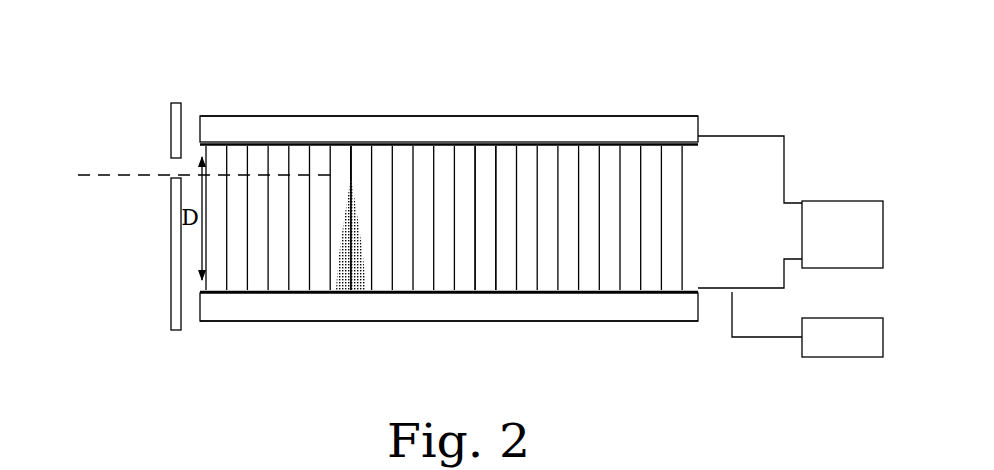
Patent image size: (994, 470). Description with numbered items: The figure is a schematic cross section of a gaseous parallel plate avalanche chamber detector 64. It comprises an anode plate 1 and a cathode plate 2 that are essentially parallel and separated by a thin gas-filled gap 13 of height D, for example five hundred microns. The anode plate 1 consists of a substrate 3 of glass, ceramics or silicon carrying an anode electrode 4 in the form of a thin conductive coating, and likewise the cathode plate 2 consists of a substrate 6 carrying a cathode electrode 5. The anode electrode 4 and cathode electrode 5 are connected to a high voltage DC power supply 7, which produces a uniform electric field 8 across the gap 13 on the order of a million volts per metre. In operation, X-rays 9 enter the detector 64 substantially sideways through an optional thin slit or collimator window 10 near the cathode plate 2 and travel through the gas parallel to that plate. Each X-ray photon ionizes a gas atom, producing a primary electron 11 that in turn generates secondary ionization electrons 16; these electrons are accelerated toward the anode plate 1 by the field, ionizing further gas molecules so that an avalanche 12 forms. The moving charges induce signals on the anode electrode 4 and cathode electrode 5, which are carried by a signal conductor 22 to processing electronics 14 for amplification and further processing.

The anode plate 1 is at (517, 323).
The cathode plate 2 is at (325, 115).
The substrate 3 is at (625, 316).
The anode electrode 4 is at (585, 293).
The cathode electrode 5 is at (702, 140).
The substrate 6 is at (650, 132).
The high voltage DC power supply 7 is at (842, 234).
The electric field 8 is at (641, 188).
The X-rays 9 is at (122, 175).
The slit or collimator window 10 is at (177, 167).
The primary electron 11 is at (356, 170).
The avalanche 12 is at (346, 291).
The gas-filled gap 13 is at (488, 252).
The processing electronics 14 is at (842, 337).
The secondary ionization electrons 16 is at (347, 175).
The signal conductor 22 is at (767, 314).
The detector 64 is at (435, 92).